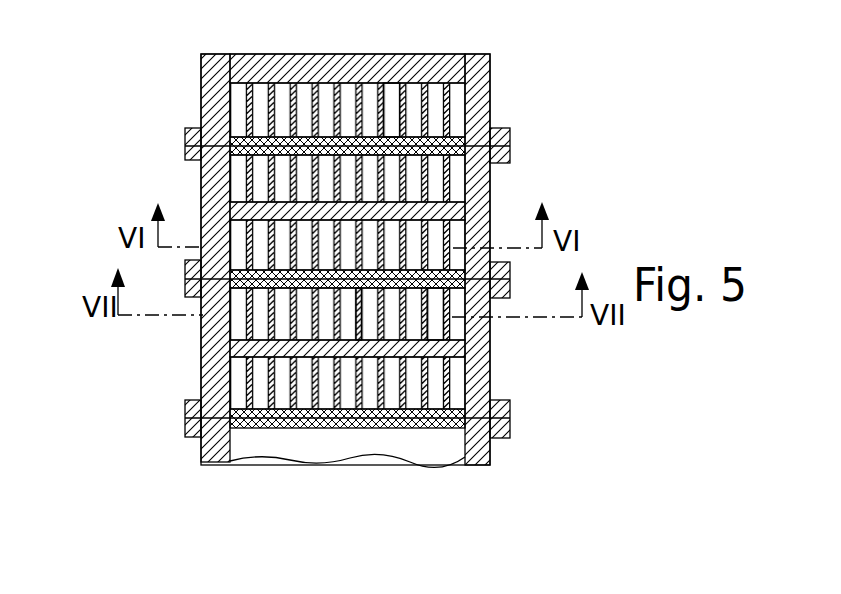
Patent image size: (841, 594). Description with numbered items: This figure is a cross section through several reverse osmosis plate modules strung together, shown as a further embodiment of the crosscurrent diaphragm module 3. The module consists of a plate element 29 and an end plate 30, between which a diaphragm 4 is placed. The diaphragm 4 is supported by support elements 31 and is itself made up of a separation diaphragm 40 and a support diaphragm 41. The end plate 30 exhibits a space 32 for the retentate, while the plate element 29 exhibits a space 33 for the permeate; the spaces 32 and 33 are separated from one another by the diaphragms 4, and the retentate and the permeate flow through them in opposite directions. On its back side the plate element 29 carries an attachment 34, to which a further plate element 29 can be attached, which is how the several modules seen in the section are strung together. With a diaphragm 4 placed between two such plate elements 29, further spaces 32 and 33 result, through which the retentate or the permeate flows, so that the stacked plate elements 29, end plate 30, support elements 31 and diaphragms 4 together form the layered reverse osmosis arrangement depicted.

The crosscurrent diaphragm module 3 is at (510, 63).
The diaphragm 4 is at (390, 112).
The plate element 29 is at (490, 195).
The end plate 30 is at (200, 72).
The support element 31 is at (430, 140).
The space for the retentate 32 is at (240, 103).
The space for the permeate 33 is at (240, 158).
The attachment 34 is at (497, 255).
The separation diaphragm 40 is at (360, 287).
The support diaphragm 41 is at (312, 138).